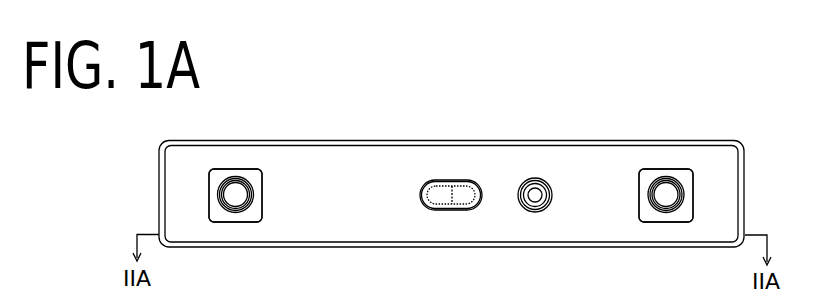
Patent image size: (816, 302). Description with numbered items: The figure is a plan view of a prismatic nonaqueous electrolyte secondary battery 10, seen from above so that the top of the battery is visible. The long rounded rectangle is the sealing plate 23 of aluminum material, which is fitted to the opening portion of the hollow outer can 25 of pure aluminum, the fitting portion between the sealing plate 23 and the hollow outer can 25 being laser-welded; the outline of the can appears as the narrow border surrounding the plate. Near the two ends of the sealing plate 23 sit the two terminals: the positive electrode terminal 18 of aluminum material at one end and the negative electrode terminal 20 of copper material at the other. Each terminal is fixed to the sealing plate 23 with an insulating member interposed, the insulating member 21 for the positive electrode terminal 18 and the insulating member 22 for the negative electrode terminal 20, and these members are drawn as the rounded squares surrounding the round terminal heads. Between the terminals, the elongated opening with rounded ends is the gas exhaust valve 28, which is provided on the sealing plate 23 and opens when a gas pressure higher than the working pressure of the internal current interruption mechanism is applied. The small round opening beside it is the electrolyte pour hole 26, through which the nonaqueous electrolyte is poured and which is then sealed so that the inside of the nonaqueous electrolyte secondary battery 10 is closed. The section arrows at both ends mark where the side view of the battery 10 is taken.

The nonaqueous electrolyte secondary battery 10 is at (122, 128).
The positive electrode terminal 18 is at (667, 193).
The negative electrode terminal 20 is at (233, 193).
The insulating member 21 is at (682, 215).
The insulating member 22 is at (253, 218).
The sealing plate 23 is at (348, 168).
The hollow outer can 25 is at (438, 247).
The electrolyte pour hole 26 is at (533, 207).
The gas exhaust valve 28 is at (463, 190).